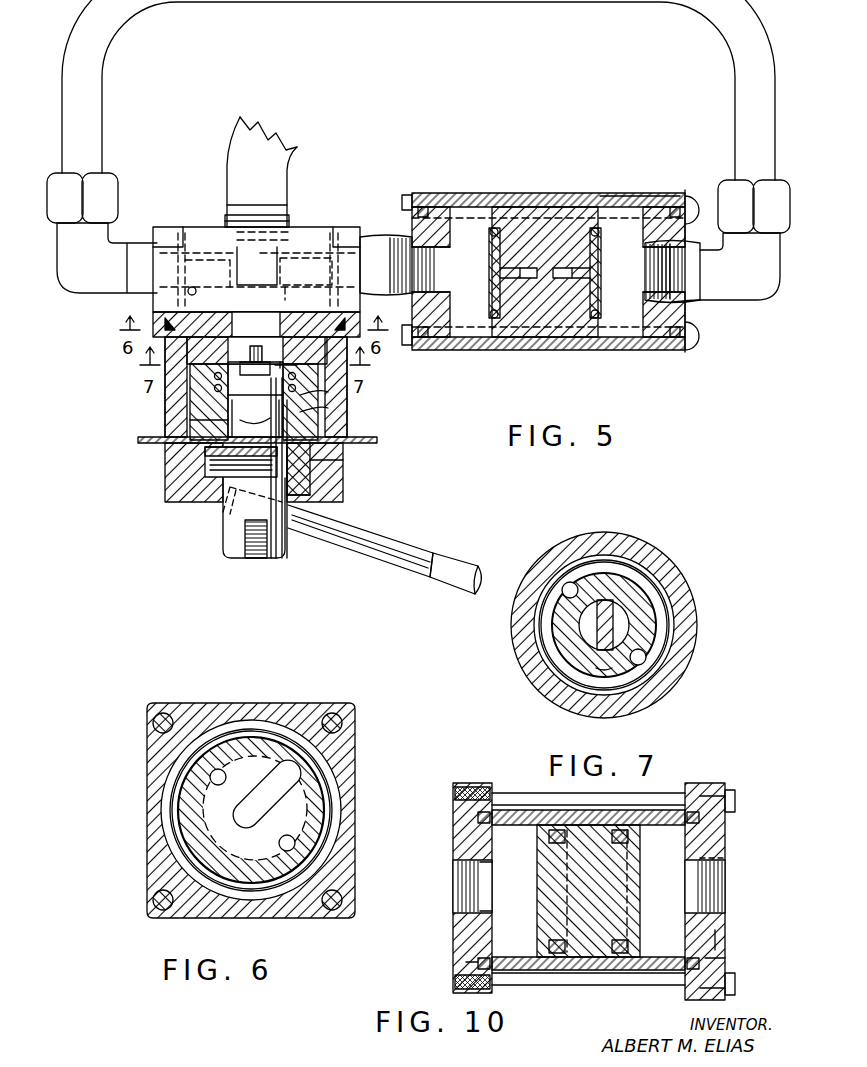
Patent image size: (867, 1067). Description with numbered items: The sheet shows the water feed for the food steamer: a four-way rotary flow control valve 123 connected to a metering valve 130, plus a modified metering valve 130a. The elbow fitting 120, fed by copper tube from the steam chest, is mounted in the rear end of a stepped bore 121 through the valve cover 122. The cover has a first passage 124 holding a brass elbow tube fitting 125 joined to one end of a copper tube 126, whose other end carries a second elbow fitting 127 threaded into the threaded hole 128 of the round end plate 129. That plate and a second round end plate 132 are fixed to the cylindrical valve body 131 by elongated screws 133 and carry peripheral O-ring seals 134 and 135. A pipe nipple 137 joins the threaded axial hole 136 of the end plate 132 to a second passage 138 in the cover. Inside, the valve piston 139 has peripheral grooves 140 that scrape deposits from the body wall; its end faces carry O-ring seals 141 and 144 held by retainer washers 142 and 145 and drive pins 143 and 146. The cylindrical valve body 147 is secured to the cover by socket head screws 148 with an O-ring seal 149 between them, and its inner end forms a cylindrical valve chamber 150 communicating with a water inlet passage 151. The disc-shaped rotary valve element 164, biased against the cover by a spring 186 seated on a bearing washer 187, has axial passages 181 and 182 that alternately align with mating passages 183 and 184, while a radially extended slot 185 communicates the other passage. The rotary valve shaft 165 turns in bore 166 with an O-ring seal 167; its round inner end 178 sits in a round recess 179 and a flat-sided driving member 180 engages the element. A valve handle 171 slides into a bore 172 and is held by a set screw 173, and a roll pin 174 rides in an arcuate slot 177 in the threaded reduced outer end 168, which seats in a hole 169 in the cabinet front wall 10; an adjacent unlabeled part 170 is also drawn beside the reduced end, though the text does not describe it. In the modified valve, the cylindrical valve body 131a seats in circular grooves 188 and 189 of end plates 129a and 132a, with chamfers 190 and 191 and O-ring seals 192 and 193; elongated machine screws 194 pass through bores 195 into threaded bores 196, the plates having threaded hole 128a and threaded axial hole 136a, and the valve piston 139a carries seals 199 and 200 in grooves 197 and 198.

In FIG. 5, the copper tube 126 is at (365, 1).
In FIG. 5, the brass elbow tube fitting 125 is at (72, 291).
In FIG. 5, the second brass elbow fitting 127 is at (762, 302).
In FIG. 5, the threaded hole 128 is at (700, 262).
In FIG. 5, the round end plate 129 is at (700, 301).
In FIG. 5, the pipe nipple 137 is at (383, 246).
In FIG. 5, the elbow fitting 120 is at (283, 184).
In FIG. 5, the four-way rotary flow control valve 123 is at (218, 222).
In FIG. 5, the valve cover 122 is at (295, 225).
In FIG. 5, the socket head screws 148 is at (352, 225).
In FIG. 6, the socket head screws 148 is at (342, 902).
In FIG. 5, the first passage 124 is at (240, 240).
In FIG. 5, the stepped passage or bore 121 is at (276, 237).
In FIG. 5, the O-ring seal 149 is at (156, 291).
In FIG. 6, the O-ring seal 149 is at (336, 802).
In FIG. 5, the second passage 138 is at (334, 265).
In FIG. 5, the axial passage 181 is at (232, 290).
In FIG. 7, the axial passage 181 is at (563, 584).
In FIG. 6, the axial passage 181 is at (210, 777).
In FIG. 5, the mating passage 183 is at (212, 292).
In FIG. 5, the radially extended slot 185 is at (268, 304).
In FIG. 6, the radially extended slot 185 is at (280, 802).
In FIG. 5, the mating passage 184 is at (296, 288).
In FIG. 5, the rotary valve element 164 is at (143, 348).
In FIG. 7, the rotary valve element 164 is at (665, 601).
In FIG. 6, the rotary valve element 164 is at (330, 792).
In FIG. 5, the cylindrical valve chamber 150 is at (188, 392).
In FIG. 7, the cylindrical valve chamber 150 is at (670, 625).
In FIG. 5, the bore 166 is at (190, 418).
In FIG. 5, the round recess 179 is at (255, 399).
In FIG. 7, the round recess 179 is at (592, 642).
In FIG. 5, the water inlet passage 151 is at (255, 424).
In FIG. 5, the axial passage 182 is at (280, 330).
In FIG. 7, the axial passage 182 is at (645, 656).
In FIG. 6, the axial passage 182 is at (295, 845).
In FIG. 5, the flat-sided driving member 180 is at (214, 384).
In FIG. 7, the flat-sided driving member 180 is at (622, 673).
In FIG. 5, the round inner end 178 is at (293, 368).
In FIG. 5, the spring 186 is at (330, 394).
In FIG. 5, the bearing washer 187 is at (330, 412).
In FIG. 5, the cylindrical valve body 147 is at (140, 440).
In FIG. 7, the cylindrical valve body 147 is at (690, 600).
In FIG. 5, the cabinet front wall 10 is at (378, 442).
In FIG. 5, the O-ring seal 167 is at (344, 455).
In FIG. 5, the hole 169 is at (206, 452).
In FIG. 5, the arcuate slot 177 is at (208, 474).
In FIG. 5, the threaded reduced outer end 168 is at (336, 481).
In FIG. 5, the retainer 170 is at (320, 500).
In FIG. 5, the rotary valve shaft 165 is at (247, 562).
In FIG. 5, the set screw 173 is at (262, 558).
In FIG. 5, the bore 172 is at (286, 548).
In FIG. 5, the roll pin 174 is at (230, 500).
In FIG. 5, the valve handle 171 is at (406, 548).
In FIG. 5, the metering valve 130 is at (546, 193).
In FIG. 5, the cylindrical valve body 131 is at (600, 193).
In FIG. 5, the peripheral grooves 140 is at (552, 340).
In FIG. 5, the second round end plate 132 is at (430, 193).
In FIG. 5, the threaded axial hole 136 is at (478, 250).
In FIG. 5, the peripheral O-ring seal 134 is at (684, 343).
In FIG. 5, the elongated screws 133 is at (700, 336).
In FIG. 5, the peripheral O-ring seal 135 is at (428, 340).
In FIG. 5, the valve piston 139 is at (511, 218).
In FIG. 5, the O-ring seal 141 is at (494, 320).
In FIG. 5, the O-ring seal 144 is at (600, 320).
In FIG. 5, the retainer washer 142 is at (490, 300).
In FIG. 5, the retainer washer 145 is at (600, 300).
In FIG. 5, the drive pin 143 is at (490, 270).
In FIG. 5, the drive pin 146 is at (600, 270).
In FIG. 10, the end plate 132a is at (466, 870).
In FIG. 10, the threaded hole 128a is at (728, 880).
In FIG. 10, the cylindrical valve body 131a is at (672, 826).
In FIG. 10, the metering valve 130a is at (722, 788).
In FIG. 10, the end plate 129a is at (735, 991).
In FIG. 10, the valve piston 139a is at (615, 889).
In FIG. 10, the seal 199 is at (548, 836).
In FIG. 10, the seal 200 is at (622, 840).
In FIG. 10, the groove 197 is at (548, 944).
In FIG. 10, the groove 198 is at (628, 944).
In FIG. 10, the bores 196 is at (456, 983).
In FIG. 10, the circular groove 189 is at (478, 838).
In FIG. 10, the O-ring seal 193 is at (478, 950).
In FIG. 10, the elongated machine screws 194 is at (736, 972).
In FIG. 10, the bores 195 is at (690, 990).
In FIG. 10, the circular groove 188 is at (730, 858).
In FIG. 10, the threaded axial hole 136a is at (483, 872).
In FIG. 10, the O-ring seal 192 is at (735, 942).
In FIG. 10, the chamfer 190 is at (737, 958).
In FIG. 10, the chamfer 191 is at (478, 962).